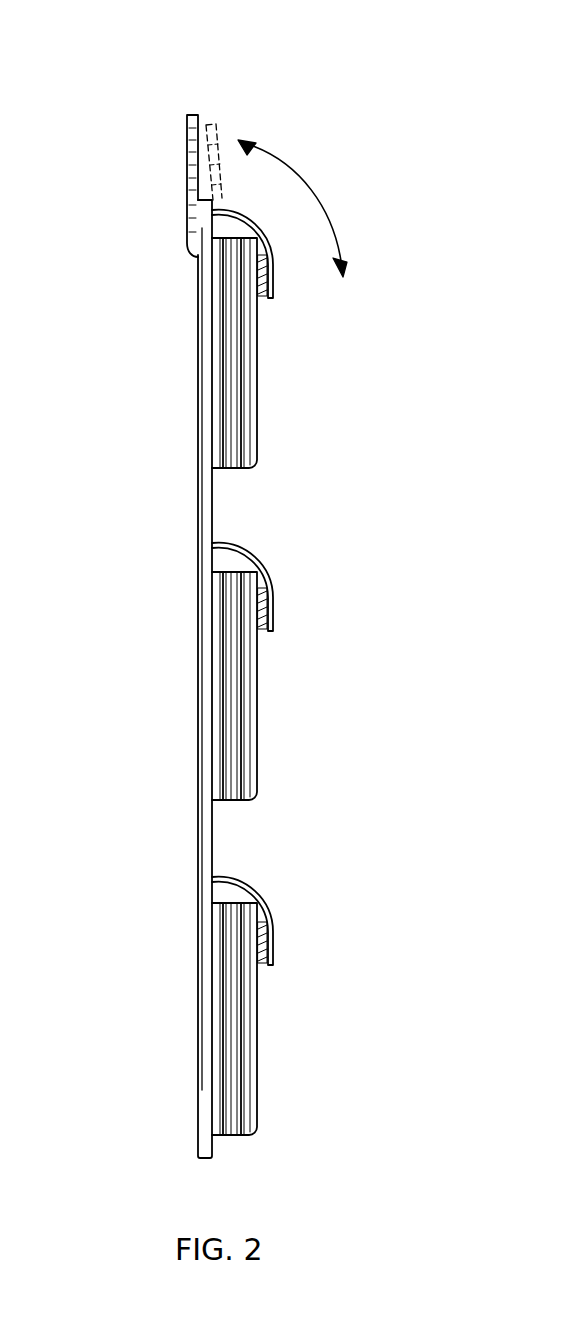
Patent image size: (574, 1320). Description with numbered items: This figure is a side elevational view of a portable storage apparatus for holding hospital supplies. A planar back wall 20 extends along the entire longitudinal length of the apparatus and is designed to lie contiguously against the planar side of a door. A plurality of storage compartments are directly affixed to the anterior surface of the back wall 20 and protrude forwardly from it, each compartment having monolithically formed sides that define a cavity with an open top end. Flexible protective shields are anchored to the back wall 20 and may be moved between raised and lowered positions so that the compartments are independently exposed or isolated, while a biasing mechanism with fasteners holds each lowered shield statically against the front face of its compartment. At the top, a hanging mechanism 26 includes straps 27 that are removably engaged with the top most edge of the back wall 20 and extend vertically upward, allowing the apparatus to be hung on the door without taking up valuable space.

The back wall 20 is at (205, 710).
The hanging mechanism 26 is at (183, 150).
The strap 27 is at (194, 115).